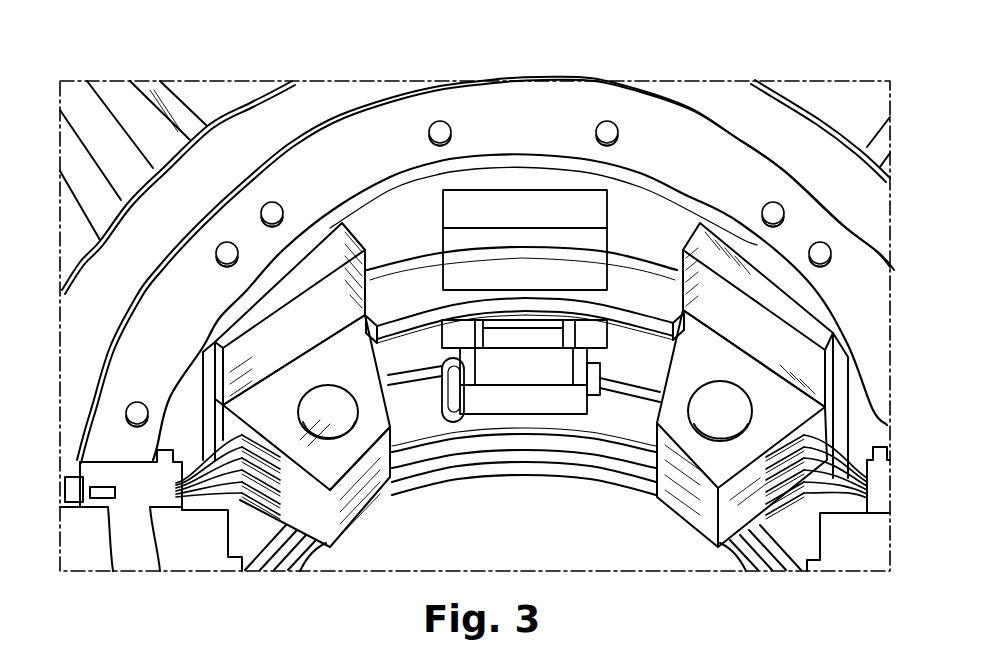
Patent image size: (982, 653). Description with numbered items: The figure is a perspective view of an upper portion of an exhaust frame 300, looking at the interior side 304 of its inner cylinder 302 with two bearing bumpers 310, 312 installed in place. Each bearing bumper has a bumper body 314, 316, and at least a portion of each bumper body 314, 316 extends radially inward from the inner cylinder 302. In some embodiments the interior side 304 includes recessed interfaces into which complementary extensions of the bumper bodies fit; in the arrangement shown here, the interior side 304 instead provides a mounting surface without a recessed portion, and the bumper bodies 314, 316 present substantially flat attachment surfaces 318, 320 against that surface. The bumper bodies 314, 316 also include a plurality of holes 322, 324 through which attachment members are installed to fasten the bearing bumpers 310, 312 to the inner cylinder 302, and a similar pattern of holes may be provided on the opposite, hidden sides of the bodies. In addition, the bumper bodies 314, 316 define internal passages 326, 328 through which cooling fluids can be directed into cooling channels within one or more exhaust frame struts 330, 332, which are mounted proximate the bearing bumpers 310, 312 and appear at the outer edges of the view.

The exhaust frame 300 is at (247, 86).
The inner cylinder 302 is at (92, 327).
The interior side 304 is at (408, 190).
The bearing bumper 310 is at (383, 498).
The bearing bumper 312 is at (673, 497).
The bumper body 314 is at (372, 335).
The bumper body 316 is at (693, 343).
The attachment surface 318 is at (268, 372).
The attachment surface 320 is at (722, 332).
The holes 322 is at (176, 486).
The holes 324 is at (867, 485).
The internal passage 326 is at (340, 390).
The internal passage 328 is at (716, 410).
The exhaust frame strut 330 is at (166, 112).
The exhaust frame strut 332 is at (880, 140).